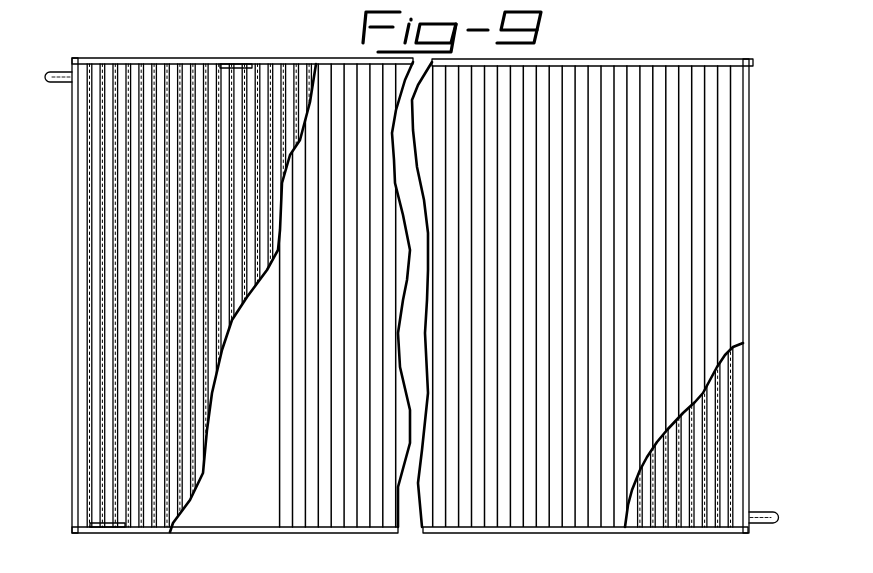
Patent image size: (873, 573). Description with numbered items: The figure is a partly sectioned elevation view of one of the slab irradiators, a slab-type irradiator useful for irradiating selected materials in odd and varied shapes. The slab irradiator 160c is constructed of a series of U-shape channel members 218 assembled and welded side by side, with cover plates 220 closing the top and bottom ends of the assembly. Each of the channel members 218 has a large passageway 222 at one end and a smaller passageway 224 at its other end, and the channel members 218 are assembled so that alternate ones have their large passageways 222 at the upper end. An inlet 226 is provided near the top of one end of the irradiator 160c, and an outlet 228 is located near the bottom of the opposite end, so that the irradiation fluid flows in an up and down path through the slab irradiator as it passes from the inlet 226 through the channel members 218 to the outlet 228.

The slab irradiator 160c is at (678, 52).
The U-shape channel members 218 is at (100, 163).
The cover plates 220 is at (170, 58).
The large passageway 222 is at (125, 68).
The smaller passageway 224 is at (225, 62).
The inlet 226 is at (50, 72).
The outlet 228 is at (752, 512).